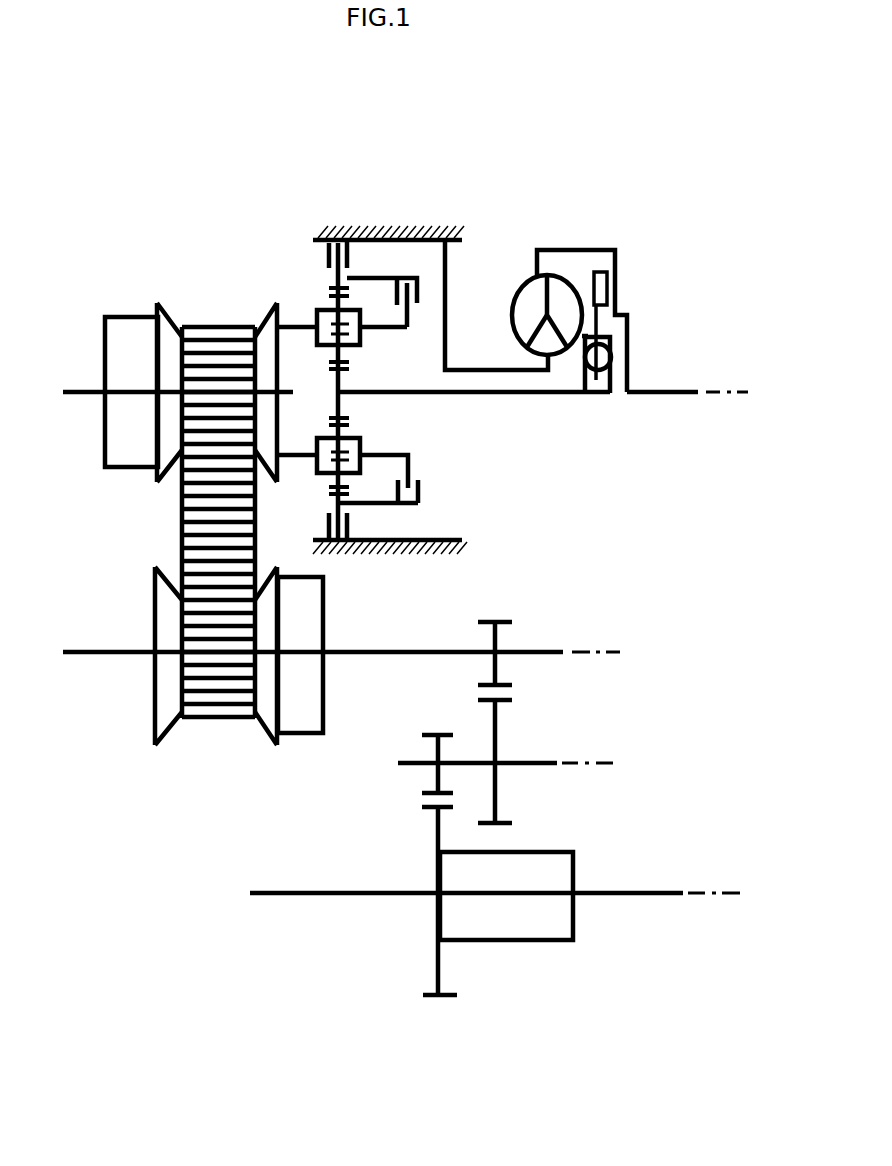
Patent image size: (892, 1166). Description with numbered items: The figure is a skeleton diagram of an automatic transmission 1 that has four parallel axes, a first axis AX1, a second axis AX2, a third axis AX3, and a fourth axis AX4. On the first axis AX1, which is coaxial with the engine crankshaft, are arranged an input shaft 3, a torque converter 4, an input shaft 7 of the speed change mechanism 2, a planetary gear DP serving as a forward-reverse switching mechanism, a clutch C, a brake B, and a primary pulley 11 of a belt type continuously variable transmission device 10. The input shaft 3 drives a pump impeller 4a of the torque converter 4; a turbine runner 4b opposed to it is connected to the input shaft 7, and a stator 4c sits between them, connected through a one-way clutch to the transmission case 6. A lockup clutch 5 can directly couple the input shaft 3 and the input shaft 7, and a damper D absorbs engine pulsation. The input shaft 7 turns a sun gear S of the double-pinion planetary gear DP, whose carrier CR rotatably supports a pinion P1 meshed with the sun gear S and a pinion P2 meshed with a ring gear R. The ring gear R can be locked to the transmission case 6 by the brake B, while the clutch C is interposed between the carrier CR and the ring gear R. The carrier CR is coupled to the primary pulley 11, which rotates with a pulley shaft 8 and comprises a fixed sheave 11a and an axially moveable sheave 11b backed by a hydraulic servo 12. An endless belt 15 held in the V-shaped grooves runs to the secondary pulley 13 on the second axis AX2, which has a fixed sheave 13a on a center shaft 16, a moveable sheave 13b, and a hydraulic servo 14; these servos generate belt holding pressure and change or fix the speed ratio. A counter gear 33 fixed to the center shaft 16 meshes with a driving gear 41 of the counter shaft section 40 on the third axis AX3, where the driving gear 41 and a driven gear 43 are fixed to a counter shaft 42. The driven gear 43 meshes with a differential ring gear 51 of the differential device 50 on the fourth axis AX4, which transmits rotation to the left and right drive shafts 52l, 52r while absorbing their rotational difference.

The automatic transmission 1 is at (398, 122).
The speed change mechanism 2 is at (355, 210).
The input shaft 3 is at (650, 390).
The torque converter 4 is at (573, 233).
The pump impeller 4a is at (537, 293).
The turbine runner 4b is at (563, 293).
The stator 4c is at (552, 345).
The lockup clutch 5 is at (608, 282).
The transmission case 6 is at (457, 232).
The input shaft 7 is at (548, 396).
The pulley shaft 8 is at (78, 397).
The belt type continuously variable transmission device 10 is at (170, 242).
The primary pulley 11 is at (260, 267).
The fixed sheave 11a is at (270, 307).
The moveable sheave 11b is at (167, 307).
The hydraulic servo 12 is at (138, 313).
The secondary pulley 13 is at (260, 780).
The fixed sheave 13a is at (167, 742).
The moveable sheave 13b is at (270, 742).
The hydraulic servo 14 is at (308, 730).
The belt 15 is at (180, 520).
The center shaft 16 is at (102, 655).
The counter gear 33 is at (507, 623).
The counter shaft section 40 is at (552, 735).
The driving gear 41 is at (507, 703).
The counter shaft 42 is at (458, 762).
The driven gear 43 is at (432, 734).
The differential device 50 is at (540, 845).
The differential ring gear 51 is at (445, 808).
The left drive shaft 52l is at (320, 890).
The right drive shaft 52r is at (622, 890).
The brake B is at (337, 240).
The clutch C is at (410, 282).
The carrier CR is at (321, 309).
The damper D is at (612, 334).
The planetary gear DP is at (290, 283).
The pinion P1 is at (350, 357).
The pinion P2 is at (350, 292).
The ring gear R is at (350, 271).
The sun gear S is at (342, 379).
The first axis AX1 is at (748, 392).
The second axis AX2 is at (619, 652).
The third axis AX3 is at (610, 763).
The fourth axis AX4 is at (734, 893).